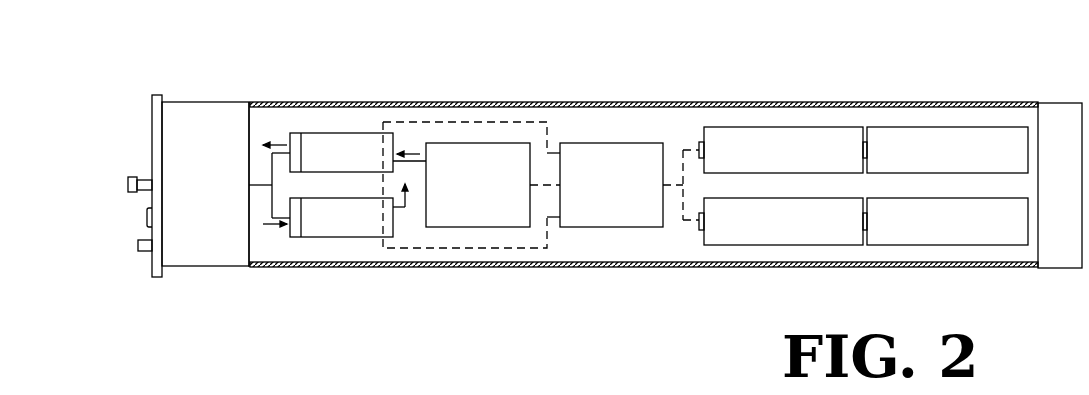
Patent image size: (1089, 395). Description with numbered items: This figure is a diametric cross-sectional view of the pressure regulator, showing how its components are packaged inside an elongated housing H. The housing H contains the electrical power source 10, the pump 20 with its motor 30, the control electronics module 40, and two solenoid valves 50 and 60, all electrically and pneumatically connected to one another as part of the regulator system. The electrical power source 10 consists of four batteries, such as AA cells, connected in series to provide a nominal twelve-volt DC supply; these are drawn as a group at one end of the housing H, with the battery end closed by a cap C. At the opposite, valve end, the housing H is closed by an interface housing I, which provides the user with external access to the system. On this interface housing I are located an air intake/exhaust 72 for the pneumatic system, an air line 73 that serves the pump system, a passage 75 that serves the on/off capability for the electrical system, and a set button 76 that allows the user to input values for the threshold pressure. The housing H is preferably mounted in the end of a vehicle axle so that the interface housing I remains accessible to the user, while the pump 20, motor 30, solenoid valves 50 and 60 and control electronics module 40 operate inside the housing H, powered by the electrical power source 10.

The electrical power source 10 is at (777, 122).
The pump 20 is at (465, 233).
The motor 30 is at (463, 227).
The control electronics module 40 is at (613, 227).
The solenoid valve 50 is at (342, 133).
The solenoid valve 60 is at (337, 237).
The air intake/exhaust 72 is at (527, 394).
The air line 73 is at (147, 178).
The passage 75 is at (146, 252).
The set button 76 is at (147, 217).
The interface housing I is at (215, 102).
The housing H is at (457, 103).
The cap C is at (1060, 103).